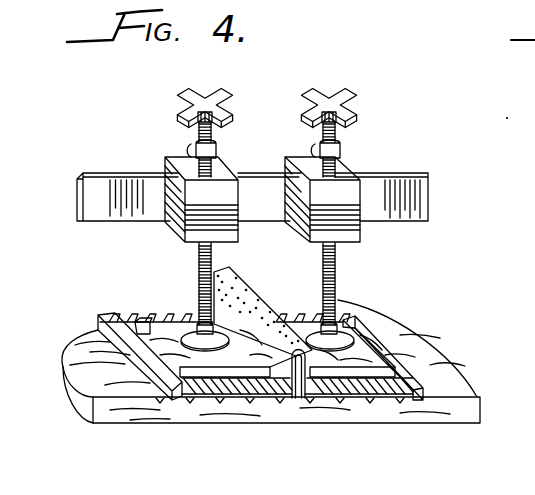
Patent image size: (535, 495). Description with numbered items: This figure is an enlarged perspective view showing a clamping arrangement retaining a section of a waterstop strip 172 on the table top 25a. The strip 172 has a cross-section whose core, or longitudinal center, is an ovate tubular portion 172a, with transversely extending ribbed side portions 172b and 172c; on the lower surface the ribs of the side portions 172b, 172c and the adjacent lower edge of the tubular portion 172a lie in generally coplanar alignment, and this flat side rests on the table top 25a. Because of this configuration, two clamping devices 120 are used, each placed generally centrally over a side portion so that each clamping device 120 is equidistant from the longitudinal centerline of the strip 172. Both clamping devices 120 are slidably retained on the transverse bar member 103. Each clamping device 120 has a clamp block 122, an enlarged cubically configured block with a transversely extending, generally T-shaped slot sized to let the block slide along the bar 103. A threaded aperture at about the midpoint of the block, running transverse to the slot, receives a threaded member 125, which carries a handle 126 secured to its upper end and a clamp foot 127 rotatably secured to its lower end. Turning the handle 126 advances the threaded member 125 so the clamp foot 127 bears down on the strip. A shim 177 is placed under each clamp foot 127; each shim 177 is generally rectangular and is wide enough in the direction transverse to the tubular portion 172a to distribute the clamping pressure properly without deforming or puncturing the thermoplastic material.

The transverse bar member 103 is at (420, 190).
The clamping device 120 is at (263, 220).
The clamp block 122 is at (178, 226).
The threaded member 125 is at (198, 272).
The handle 126 is at (178, 139).
The clamp foot 127 is at (188, 330).
The shim 177 is at (128, 318).
The strip 172 is at (323, 399).
The ovate tubular portion 172a is at (298, 405).
The ribbed side portion 172b is at (218, 398).
The ribbed side portion 172c is at (377, 407).
The table top 25a is at (460, 378).